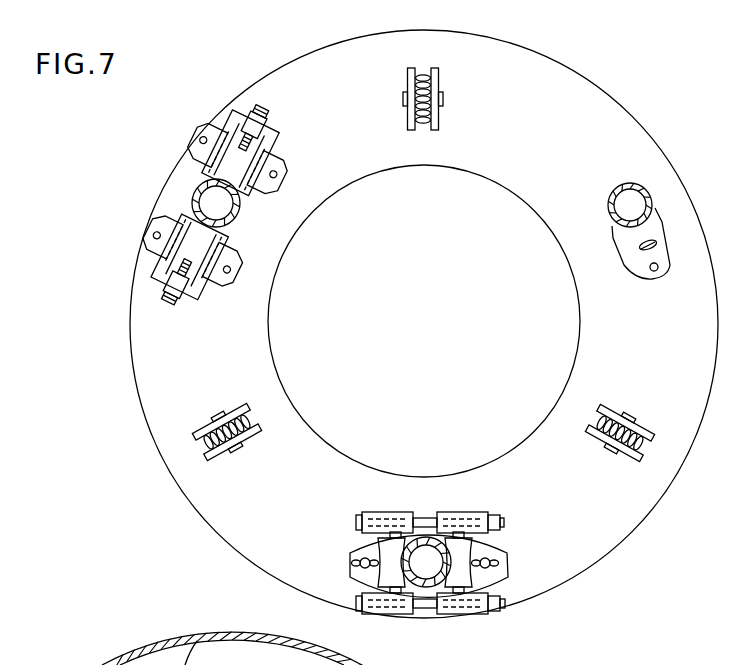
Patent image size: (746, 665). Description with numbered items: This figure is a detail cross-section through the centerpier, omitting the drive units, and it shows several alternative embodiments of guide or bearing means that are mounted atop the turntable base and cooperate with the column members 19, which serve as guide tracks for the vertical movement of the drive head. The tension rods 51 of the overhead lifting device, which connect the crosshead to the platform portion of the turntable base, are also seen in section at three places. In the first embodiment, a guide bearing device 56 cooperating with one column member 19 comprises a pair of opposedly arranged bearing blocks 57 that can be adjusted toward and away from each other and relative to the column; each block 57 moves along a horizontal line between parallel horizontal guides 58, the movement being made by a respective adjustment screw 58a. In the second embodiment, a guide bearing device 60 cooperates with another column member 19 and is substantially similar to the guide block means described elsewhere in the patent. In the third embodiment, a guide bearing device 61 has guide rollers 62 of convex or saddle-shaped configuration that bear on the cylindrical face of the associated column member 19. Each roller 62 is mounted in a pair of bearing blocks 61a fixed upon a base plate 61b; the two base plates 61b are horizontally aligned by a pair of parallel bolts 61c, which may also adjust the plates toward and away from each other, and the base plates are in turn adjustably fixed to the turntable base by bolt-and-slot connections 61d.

The column member 19 is at (238, 222).
The tension rod 51 is at (436, 92).
The guide bearing device 56 is at (183, 116).
The bearing block 57 is at (215, 205).
The horizontal guide 58 is at (219, 128).
The adjustment screw 58a is at (266, 106).
The guide bearing device 60 is at (620, 248).
The guide bearing device 61 is at (498, 628).
The bearing block 61a is at (362, 610).
The base plate 61b is at (508, 570).
The parallel bolt 61c is at (419, 513).
The bolt-and-slot connection 61d is at (559, 556).
The guide roller 62 is at (380, 548).